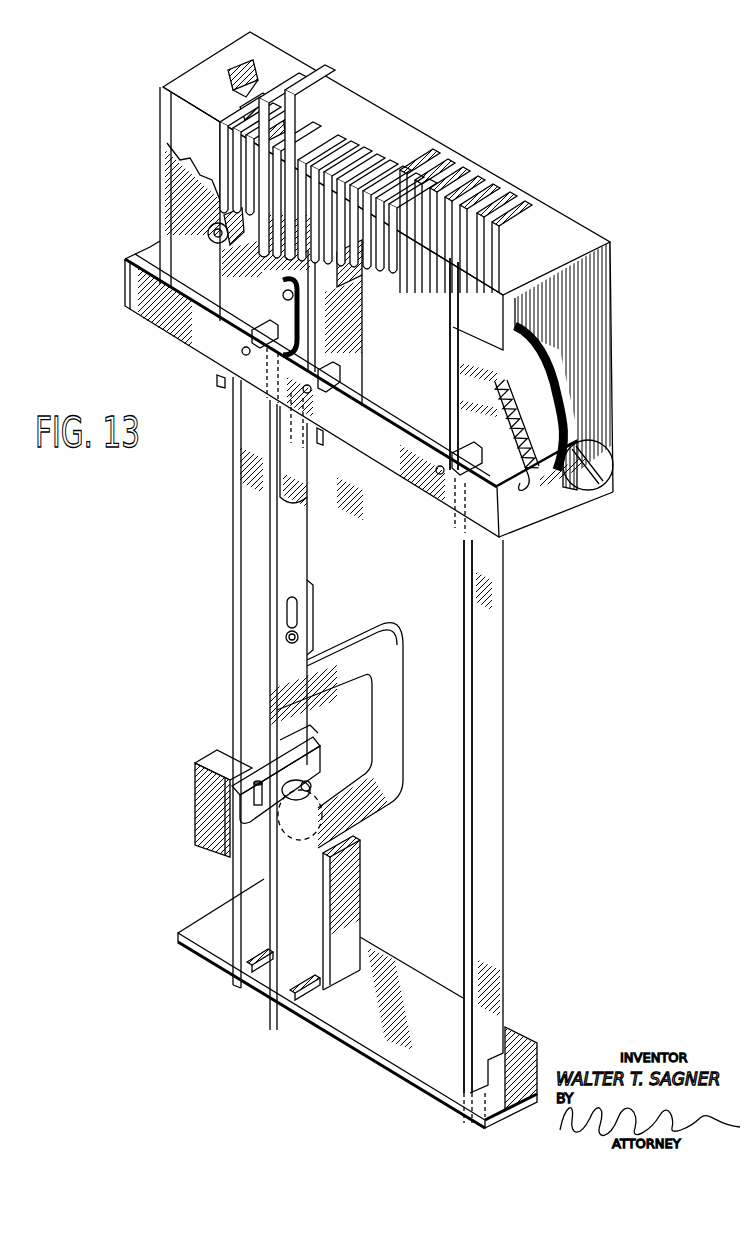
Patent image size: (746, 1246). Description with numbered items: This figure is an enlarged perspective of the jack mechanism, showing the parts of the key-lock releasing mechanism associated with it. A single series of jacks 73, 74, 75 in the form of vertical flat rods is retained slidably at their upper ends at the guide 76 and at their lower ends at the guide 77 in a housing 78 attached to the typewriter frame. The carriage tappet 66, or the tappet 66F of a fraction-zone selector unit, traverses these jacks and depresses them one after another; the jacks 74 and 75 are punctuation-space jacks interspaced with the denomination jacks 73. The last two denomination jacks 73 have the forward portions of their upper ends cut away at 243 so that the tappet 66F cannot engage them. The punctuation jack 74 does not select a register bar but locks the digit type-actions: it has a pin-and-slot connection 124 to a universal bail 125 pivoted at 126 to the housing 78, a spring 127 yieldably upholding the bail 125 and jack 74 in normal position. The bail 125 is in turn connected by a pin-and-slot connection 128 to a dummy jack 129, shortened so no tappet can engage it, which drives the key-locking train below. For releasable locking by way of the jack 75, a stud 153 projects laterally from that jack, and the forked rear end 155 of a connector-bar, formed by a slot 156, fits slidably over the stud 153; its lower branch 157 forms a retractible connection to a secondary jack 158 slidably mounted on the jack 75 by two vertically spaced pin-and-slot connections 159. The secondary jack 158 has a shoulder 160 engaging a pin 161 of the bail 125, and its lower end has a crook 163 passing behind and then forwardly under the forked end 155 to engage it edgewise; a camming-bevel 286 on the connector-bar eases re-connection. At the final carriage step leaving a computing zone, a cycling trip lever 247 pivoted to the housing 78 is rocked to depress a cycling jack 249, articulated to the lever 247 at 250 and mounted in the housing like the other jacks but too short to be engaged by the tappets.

The tappet 66 is at (245, 80).
The tappet 66F is at (288, 122).
The denomination jack 73 is at (290, 97).
The punctuation-space jack 74 is at (388, 145).
The jack 75 is at (330, 132).
The upper guide 76 is at (392, 168).
The lower guide 77 is at (320, 980).
The housing 78 is at (612, 356).
The pin-and-slot connection 124 is at (345, 368).
The universal bail 125 is at (372, 420).
The pivot 126 is at (595, 443).
The spring 127 is at (518, 425).
The pin-and-slot connection 128 is at (462, 458).
The dummy jack 129 is at (468, 563).
The stud 153 is at (272, 816).
The forked rear end 155 is at (285, 738).
The slot 156 is at (258, 785).
The lower branch 157 is at (353, 803).
The secondary jack 158 is at (280, 565).
The pin-and-slot connections 159 is at (280, 298).
The shoulder 160 is at (253, 337).
The pin 161 is at (245, 352).
The crook 163 is at (198, 765).
The cut-away 243 is at (247, 107).
The cycling trip lever 247 is at (205, 235).
The cycling jack 249 is at (233, 422).
The articulation 250 is at (222, 278).
The camming-bevel 286 is at (322, 836).